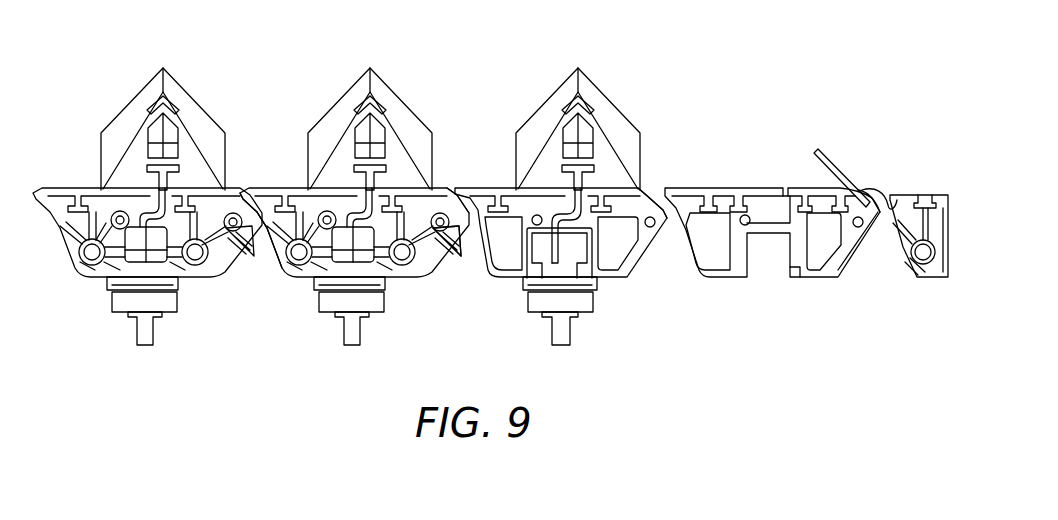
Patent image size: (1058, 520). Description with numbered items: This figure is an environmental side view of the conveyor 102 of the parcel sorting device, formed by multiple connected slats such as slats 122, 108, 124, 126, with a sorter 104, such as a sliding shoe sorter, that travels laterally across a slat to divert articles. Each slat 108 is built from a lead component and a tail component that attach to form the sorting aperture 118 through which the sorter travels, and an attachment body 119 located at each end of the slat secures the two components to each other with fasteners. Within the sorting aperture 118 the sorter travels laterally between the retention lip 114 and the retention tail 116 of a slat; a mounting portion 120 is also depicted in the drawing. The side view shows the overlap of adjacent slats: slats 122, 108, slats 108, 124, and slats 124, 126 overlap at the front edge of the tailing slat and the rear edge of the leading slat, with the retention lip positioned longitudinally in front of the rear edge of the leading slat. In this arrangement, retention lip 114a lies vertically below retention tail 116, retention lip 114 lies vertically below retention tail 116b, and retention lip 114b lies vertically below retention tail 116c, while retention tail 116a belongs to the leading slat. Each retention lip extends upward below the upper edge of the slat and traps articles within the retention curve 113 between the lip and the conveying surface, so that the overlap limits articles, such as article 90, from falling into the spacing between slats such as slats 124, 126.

The conveyor 102 is at (106, 97).
The sorter 104 is at (620, 108).
The slat 108 is at (613, 282).
The article 90 is at (815, 153).
The retention curve 113 is at (837, 272).
The retention lip 114 is at (678, 233).
The retention lip 114a is at (442, 190).
The retention lip 114b is at (866, 195).
The retention tail 116 is at (455, 192).
The retention tail 116a is at (243, 188).
The retention tail 116b is at (660, 192).
The retention tail 116c is at (880, 192).
The sorting aperture 118 is at (537, 223).
The attachment body 119 is at (310, 270).
The mounting post 120 is at (556, 278).
The slat 122 is at (273, 257).
The slat 124 is at (797, 278).
The slat 126 is at (915, 268).